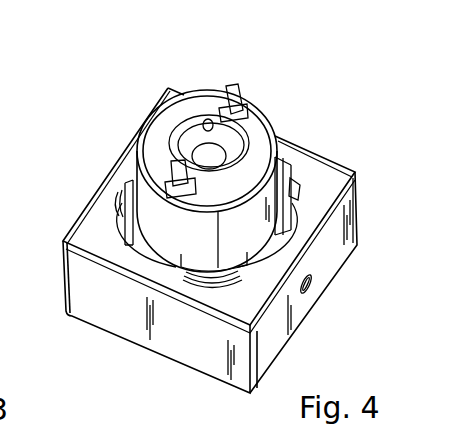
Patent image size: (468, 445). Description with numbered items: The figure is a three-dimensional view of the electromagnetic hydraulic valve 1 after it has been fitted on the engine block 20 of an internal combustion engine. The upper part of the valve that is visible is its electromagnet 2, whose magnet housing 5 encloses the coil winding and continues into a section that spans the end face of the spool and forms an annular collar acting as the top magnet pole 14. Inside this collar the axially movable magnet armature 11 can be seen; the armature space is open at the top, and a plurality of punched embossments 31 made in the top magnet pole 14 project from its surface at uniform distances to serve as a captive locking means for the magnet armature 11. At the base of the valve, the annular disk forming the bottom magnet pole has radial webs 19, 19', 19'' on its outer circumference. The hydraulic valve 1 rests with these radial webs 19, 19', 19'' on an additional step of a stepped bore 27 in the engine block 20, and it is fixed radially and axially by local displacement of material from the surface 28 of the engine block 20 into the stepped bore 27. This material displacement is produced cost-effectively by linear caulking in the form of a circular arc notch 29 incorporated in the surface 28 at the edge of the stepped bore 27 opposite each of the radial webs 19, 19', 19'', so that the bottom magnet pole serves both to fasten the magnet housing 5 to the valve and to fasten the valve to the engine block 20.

The hydraulic valve 1 is at (140, 97).
The electromagnet 2 is at (279, 121).
The magnet housing 5 is at (237, 240).
The magnet armature 11 is at (229, 147).
The top magnet pole 14 is at (176, 160).
The radial web 19 is at (293, 169).
The radial web 19' is at (271, 295).
The radial web 19'' is at (75, 212).
The engine block 20 is at (352, 200).
The stepped bore 27 is at (125, 228).
The surface 28 is at (322, 173).
The circular arc notch 29 is at (120, 176).
The punched embossment 31 is at (208, 119).